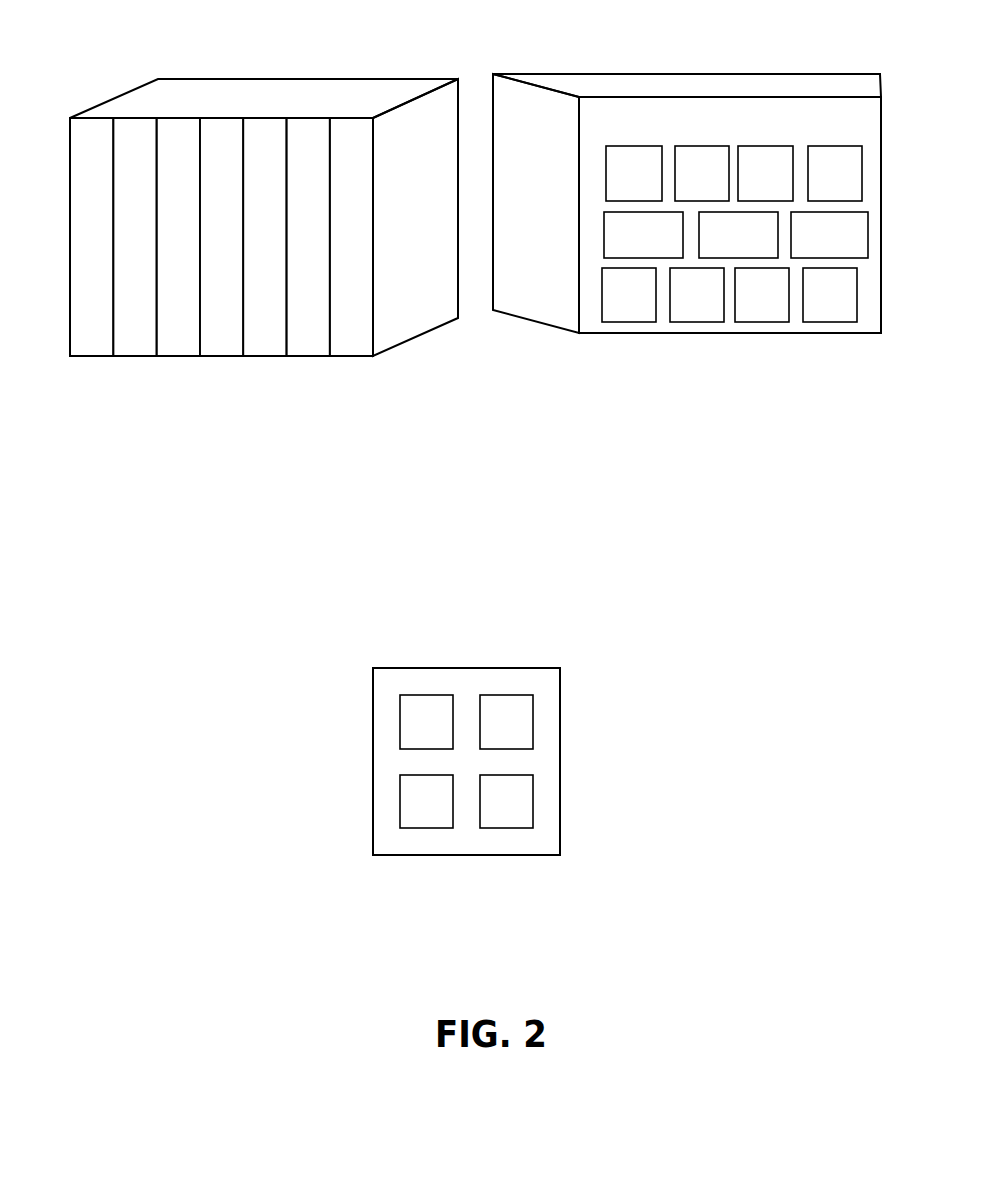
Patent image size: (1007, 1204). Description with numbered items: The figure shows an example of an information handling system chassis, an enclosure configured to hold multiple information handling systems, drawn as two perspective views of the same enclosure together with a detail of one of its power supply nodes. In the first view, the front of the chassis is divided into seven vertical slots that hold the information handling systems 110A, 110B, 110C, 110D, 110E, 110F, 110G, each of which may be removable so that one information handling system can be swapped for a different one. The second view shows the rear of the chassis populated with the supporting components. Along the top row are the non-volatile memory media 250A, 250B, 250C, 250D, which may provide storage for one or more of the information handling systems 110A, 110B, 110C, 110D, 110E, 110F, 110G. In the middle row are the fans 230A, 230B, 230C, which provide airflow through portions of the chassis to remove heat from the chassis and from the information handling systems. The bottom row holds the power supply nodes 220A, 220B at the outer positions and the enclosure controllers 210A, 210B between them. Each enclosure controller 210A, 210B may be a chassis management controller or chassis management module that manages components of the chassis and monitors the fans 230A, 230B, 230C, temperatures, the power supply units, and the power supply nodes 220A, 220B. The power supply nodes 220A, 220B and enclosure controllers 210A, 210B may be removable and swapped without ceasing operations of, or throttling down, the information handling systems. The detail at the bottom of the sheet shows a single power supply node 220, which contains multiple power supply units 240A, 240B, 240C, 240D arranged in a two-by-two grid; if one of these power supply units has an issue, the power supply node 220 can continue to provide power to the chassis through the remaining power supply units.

The information handling system 110A is at (92, 356).
The information handling system 110B is at (137, 356).
The information handling system 110C is at (183, 356).
The information handling system 110D is at (224, 356).
The information handling system 110E is at (269, 356).
The information handling system 110F is at (309, 356).
The information handling system 110G is at (357, 356).
The non-volatile memory medium 250A is at (633, 146).
The non-volatile memory medium 250B is at (689, 146).
The non-volatile memory medium 250C is at (765, 146).
The non-volatile memory medium 250D is at (832, 146).
The fan 230A is at (664, 244).
The fan 230B is at (759, 244).
The fan 230C is at (850, 244).
The power supply node 220A is at (632, 322).
The enclosure controller 210A is at (698, 322).
The enclosure controller 210B is at (758, 322).
The power supply node 220B is at (827, 322).
The power supply node 220 is at (467, 855).
The power supply unit 240A is at (400, 722).
The power supply unit 240B is at (533, 722).
The power supply unit 240C is at (533, 800).
The power supply unit 240D is at (400, 802).